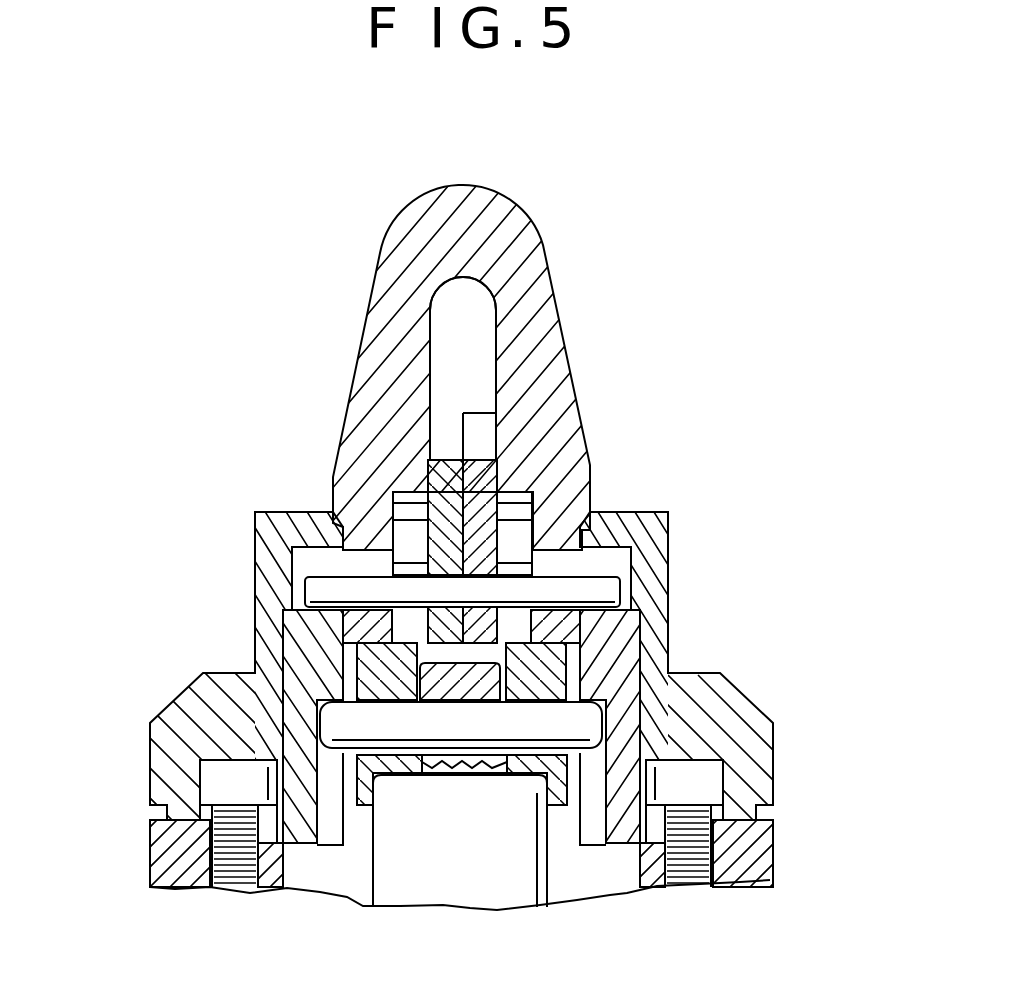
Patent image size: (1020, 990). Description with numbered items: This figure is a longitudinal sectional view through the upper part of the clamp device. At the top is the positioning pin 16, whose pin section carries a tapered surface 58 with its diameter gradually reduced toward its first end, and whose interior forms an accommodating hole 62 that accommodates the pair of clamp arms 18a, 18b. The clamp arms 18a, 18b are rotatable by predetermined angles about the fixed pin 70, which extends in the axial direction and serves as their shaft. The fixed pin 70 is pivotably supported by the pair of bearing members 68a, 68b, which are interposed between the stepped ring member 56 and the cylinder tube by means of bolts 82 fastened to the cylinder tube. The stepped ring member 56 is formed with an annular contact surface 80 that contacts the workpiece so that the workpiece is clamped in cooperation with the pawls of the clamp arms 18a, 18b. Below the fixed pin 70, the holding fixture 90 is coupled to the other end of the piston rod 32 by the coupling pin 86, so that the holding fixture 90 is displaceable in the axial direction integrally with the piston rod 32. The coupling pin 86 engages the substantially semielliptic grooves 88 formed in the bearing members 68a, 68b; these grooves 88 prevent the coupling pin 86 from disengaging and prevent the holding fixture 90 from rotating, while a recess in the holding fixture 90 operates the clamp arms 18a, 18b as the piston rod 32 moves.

The positioning pin 16 is at (548, 240).
The tapered surface 58 is at (557, 286).
The accommodating hole 62 is at (492, 333).
The clamp arm 18a is at (430, 470).
The clamp arm 18b is at (512, 490).
The fixed pin 70 is at (378, 583).
The annular contact surface 80 is at (640, 515).
The stepped ring member 56 is at (262, 575).
The bearing member 68a is at (315, 648).
The bearing member 68b is at (615, 630).
The holding fixture 90 is at (552, 682).
The coupling pin 86 is at (582, 724).
The bolt 82 is at (228, 788).
The groove 88 is at (326, 860).
The piston rod 32 is at (457, 870).